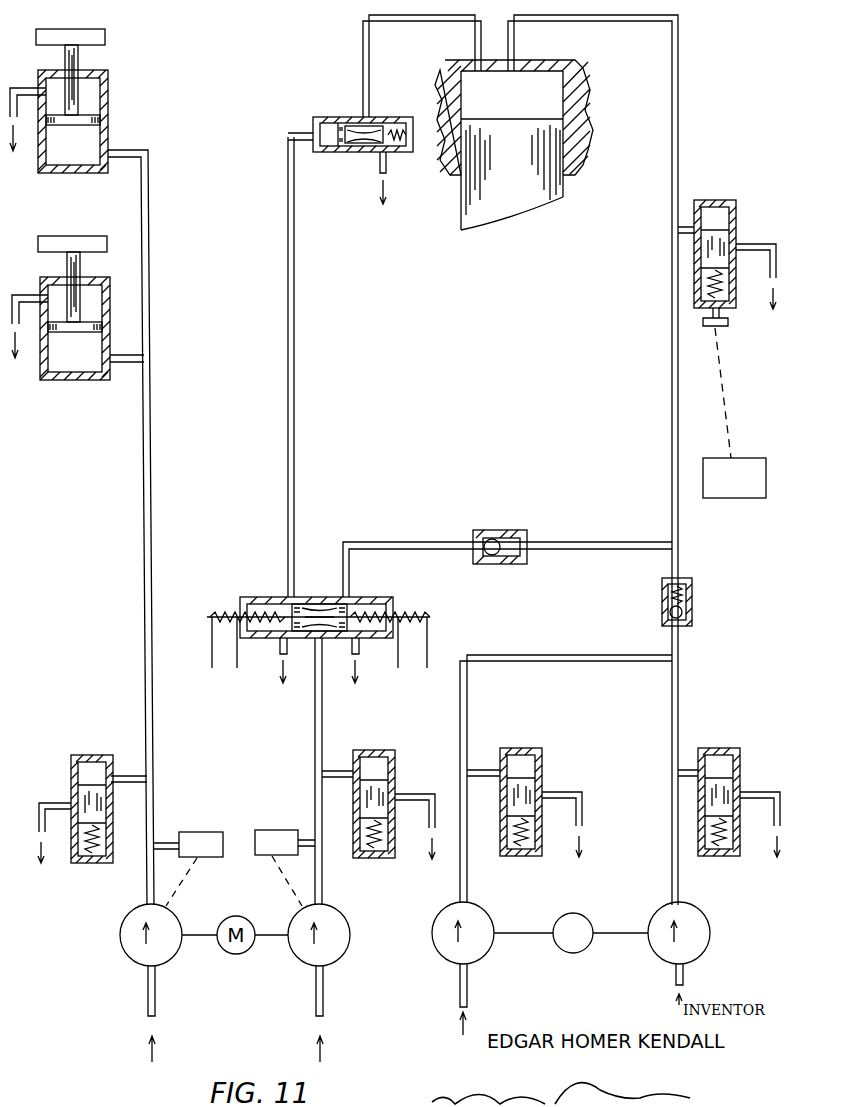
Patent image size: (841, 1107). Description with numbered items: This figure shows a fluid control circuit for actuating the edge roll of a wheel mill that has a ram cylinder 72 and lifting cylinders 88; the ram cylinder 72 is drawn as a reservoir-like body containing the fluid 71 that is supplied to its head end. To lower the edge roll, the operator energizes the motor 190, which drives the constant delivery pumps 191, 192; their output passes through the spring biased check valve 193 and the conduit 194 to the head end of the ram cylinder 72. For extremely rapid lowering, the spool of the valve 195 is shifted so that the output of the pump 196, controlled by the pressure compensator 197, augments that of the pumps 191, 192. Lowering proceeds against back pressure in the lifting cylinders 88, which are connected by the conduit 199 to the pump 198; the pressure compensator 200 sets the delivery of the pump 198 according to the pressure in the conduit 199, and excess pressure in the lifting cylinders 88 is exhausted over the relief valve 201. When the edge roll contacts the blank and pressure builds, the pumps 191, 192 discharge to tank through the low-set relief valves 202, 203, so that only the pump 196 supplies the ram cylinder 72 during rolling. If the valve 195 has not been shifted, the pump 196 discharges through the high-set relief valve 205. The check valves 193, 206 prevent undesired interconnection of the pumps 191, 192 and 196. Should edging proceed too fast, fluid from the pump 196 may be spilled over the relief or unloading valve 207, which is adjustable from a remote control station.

The lifting cylinders 88 is at (108, 98).
The hydraulic fluid 71 is at (563, 197).
The ram cylinder 72 is at (577, 122).
The motor 190 is at (582, 948).
The constant delivery pump 191 is at (697, 950).
The constant delivery pump 192 is at (453, 953).
The spring biased check valve 193 is at (683, 603).
The conduit 194 is at (672, 375).
The valve 195 is at (314, 598).
The pump 196 is at (338, 955).
The pressure compensator 197 is at (280, 830).
The pump 198 is at (128, 950).
The conduit 199 is at (143, 455).
The pressure compensator 200 is at (185, 832).
The relief valve 201 is at (72, 770).
The relief valve 202 is at (525, 750).
The relief valve 203 is at (718, 750).
The relief valve 205 is at (382, 750).
The check valve 206 is at (497, 530).
The relief or unloading valve 207 is at (328, 117).